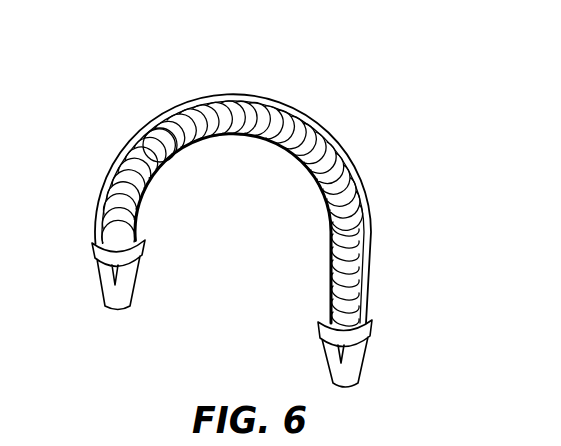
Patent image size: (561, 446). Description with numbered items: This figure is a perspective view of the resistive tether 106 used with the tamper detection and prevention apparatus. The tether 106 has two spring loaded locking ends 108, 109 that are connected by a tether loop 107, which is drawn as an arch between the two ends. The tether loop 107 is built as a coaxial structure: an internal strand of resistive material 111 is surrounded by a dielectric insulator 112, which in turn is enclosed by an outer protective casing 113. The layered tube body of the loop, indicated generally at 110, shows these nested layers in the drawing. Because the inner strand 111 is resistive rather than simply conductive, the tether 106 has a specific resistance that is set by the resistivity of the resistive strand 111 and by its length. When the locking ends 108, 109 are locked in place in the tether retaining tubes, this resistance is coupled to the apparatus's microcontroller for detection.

The tether 106 is at (162, 86).
The tether loop 107 is at (245, 144).
The spring loaded locking end 108 is at (355, 356).
The spring loaded locking end 109 is at (128, 288).
The tubular sheath 110 is at (339, 125).
The resistive strand 111 is at (350, 250).
The dielectric insulator 112 is at (358, 178).
The outer protective casing 113 is at (300, 110).